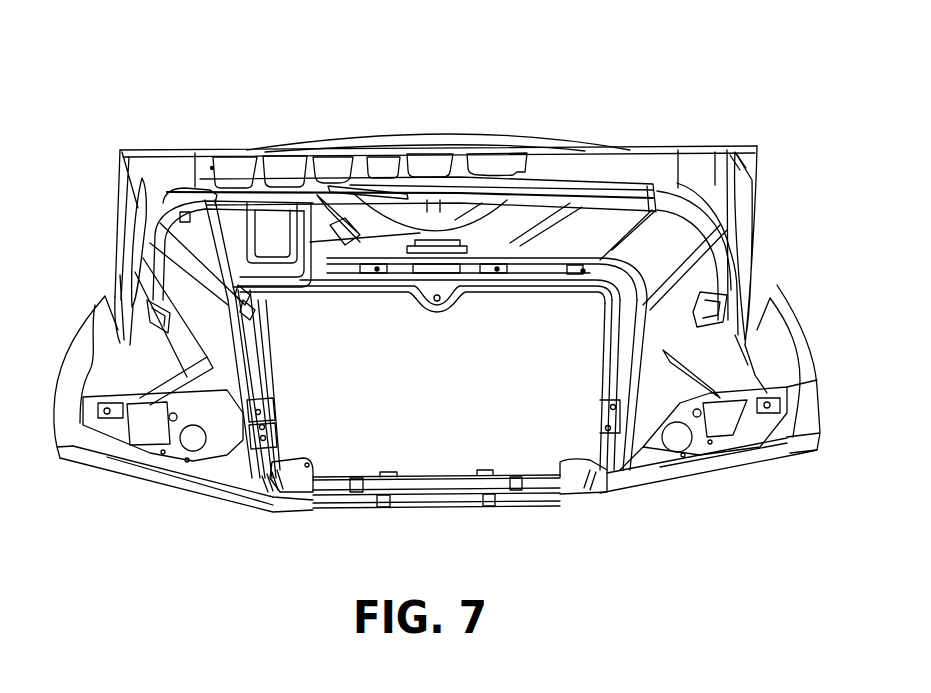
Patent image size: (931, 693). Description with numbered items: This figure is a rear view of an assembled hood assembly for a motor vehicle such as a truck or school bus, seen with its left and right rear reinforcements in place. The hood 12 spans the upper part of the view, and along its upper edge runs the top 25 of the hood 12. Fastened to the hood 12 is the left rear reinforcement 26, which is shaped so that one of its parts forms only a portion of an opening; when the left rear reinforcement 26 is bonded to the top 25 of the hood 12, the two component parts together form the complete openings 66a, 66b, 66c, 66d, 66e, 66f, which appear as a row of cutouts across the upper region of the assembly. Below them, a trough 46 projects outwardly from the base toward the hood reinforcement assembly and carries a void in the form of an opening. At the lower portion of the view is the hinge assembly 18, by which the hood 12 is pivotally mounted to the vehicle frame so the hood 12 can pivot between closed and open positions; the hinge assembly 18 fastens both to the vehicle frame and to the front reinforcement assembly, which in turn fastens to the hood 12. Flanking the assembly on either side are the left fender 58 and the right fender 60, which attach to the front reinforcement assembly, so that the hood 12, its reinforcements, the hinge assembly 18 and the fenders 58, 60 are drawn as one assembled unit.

The hood 12 is at (537, 150).
The top 25 is at (625, 148).
The left rear reinforcement 26 is at (237, 223).
The trough 46 is at (287, 287).
The left fender 58 is at (83, 348).
The right fender 60 is at (783, 350).
The hinge assembly 18 is at (280, 488).
The opening 66a is at (232, 168).
The opening 66b is at (280, 167).
The opening 66c is at (327, 163).
The opening 66d is at (380, 165).
The opening 66e is at (450, 117).
The opening 66f is at (487, 157).